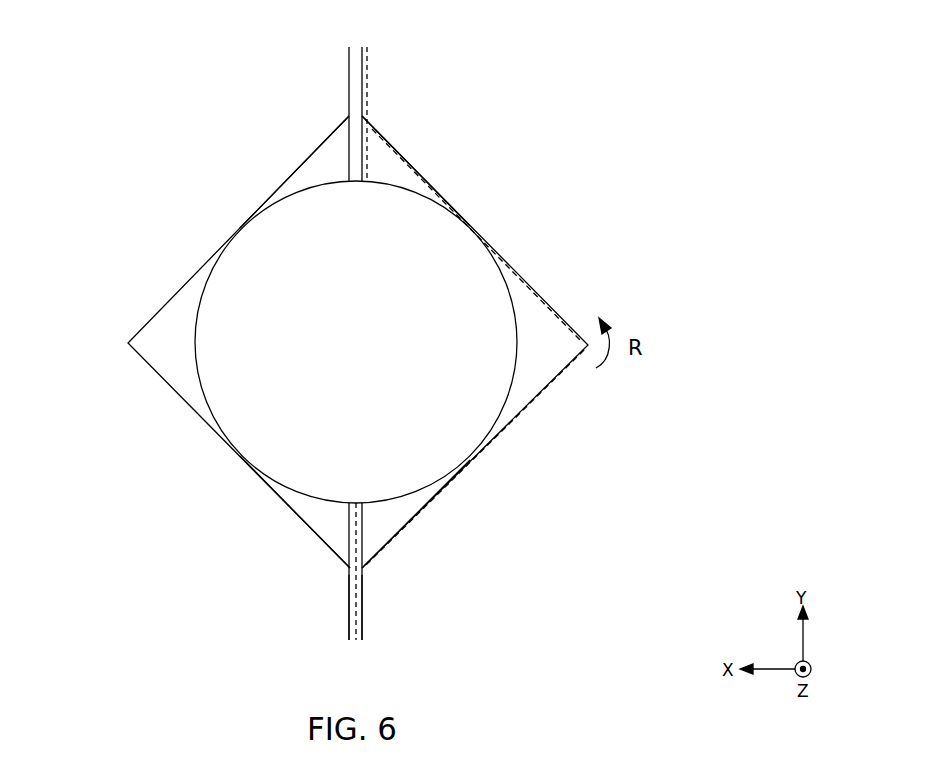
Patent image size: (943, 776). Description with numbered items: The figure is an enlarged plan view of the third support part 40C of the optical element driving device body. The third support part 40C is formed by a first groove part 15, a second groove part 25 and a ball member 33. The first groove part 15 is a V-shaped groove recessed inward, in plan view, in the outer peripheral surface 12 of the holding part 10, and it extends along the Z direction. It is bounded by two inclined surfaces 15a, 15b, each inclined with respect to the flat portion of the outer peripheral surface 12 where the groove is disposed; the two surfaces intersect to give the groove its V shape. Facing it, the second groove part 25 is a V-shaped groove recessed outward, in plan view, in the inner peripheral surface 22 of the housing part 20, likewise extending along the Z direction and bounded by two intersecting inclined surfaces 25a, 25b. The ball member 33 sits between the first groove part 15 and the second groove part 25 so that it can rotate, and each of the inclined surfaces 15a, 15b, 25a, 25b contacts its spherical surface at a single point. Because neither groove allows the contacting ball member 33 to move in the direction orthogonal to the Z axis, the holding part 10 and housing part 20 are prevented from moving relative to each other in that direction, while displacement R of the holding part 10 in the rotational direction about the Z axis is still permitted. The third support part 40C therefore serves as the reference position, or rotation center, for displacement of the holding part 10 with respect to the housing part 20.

The holding part 10 is at (403, 81).
The outer peripheral surface 12 is at (363, 585).
The first groove part 15 is at (537, 298).
The inclined surface 15a is at (386, 133).
The inclined surface 15b is at (398, 545).
The housing part 20 is at (345, 81).
The inner peripheral surface 22 is at (350, 596).
The second groove part 25 is at (150, 346).
The inclined surface 25a is at (326, 133).
The inclined surface 25b is at (328, 550).
The ball member 33 is at (325, 330).
The third support part 40C is at (222, 214).